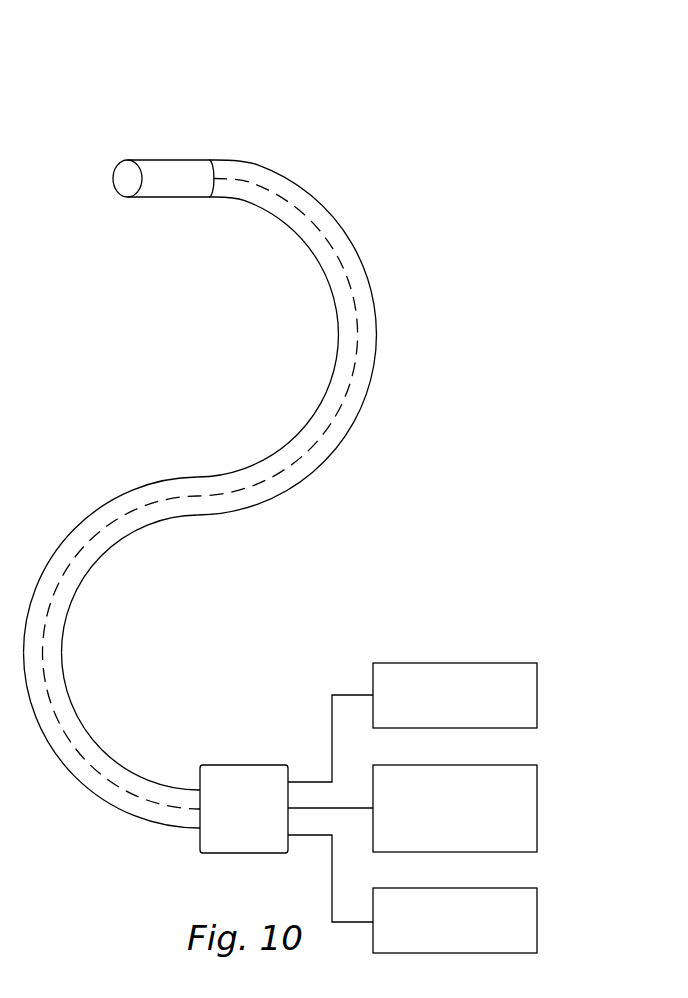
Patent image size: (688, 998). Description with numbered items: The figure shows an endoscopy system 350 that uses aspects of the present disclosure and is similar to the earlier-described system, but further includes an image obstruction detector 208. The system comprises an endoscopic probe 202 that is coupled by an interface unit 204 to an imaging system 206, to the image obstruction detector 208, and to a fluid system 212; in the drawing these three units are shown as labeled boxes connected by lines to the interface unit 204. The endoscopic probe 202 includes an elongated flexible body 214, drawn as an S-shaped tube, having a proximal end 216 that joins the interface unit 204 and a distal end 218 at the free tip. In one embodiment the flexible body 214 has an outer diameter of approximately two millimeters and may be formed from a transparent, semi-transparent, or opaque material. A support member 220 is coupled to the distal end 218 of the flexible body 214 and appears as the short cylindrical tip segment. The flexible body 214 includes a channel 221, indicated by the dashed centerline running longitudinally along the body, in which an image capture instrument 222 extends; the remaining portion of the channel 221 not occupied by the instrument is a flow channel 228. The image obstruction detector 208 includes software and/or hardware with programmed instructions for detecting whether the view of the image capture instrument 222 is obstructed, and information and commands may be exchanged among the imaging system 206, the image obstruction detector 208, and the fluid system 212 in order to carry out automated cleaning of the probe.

The endoscopy system 350 is at (402, 84).
The endoscopic probe 202 is at (374, 420).
The interface unit 204 is at (265, 824).
The imaging system 206 is at (538, 695).
The image obstruction detector 208 is at (538, 812).
The fluid system 212 is at (538, 923).
The elongated flexible body 214 is at (110, 498).
The proximal end 216 is at (176, 753).
The distal end 218 is at (215, 141).
The support member 220 is at (163, 159).
The channel 221 is at (346, 342).
The image capture instrument 222 is at (342, 266).
The flow channel 228 is at (287, 223).